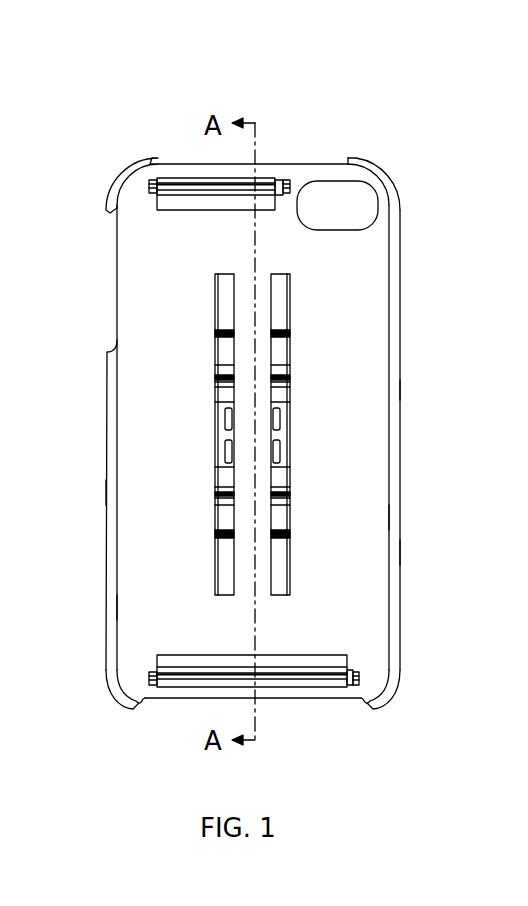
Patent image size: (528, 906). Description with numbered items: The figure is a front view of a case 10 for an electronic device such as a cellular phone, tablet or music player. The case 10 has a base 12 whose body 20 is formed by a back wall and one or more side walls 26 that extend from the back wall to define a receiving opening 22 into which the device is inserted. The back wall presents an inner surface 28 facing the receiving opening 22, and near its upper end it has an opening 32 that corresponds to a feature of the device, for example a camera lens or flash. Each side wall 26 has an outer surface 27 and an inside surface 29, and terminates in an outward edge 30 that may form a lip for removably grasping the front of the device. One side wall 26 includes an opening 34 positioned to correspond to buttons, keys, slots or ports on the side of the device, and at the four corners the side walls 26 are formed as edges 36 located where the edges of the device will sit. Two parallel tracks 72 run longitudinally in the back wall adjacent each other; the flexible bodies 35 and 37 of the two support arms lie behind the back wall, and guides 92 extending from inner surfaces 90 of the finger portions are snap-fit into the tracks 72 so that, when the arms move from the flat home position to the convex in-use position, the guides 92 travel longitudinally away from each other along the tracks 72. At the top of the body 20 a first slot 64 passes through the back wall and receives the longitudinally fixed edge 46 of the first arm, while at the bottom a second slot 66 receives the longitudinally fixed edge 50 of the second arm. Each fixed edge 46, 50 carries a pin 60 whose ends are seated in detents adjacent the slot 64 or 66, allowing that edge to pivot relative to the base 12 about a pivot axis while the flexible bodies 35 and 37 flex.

The case 10 is at (150, 121).
The base 12 is at (376, 152).
The body 20 is at (400, 385).
The receiving opening 22 is at (398, 461).
The side wall 26 is at (107, 352).
The outer surface 27 is at (97, 494).
The inner surface 28 is at (372, 300).
The inside surface 29 is at (128, 608).
The outward edge 30 is at (117, 384).
The opening 32 is at (341, 231).
The opening 34 is at (104, 272).
The flexible body 35 is at (280, 345).
The edge 36 is at (124, 170).
The flexible body 37 is at (288, 560).
The longitudinally fixed edge 46 is at (266, 172).
The longitudinally fixed edge 50 is at (327, 690).
The pin 60 is at (284, 179).
The first slot 64 is at (180, 212).
The second slot 66 is at (297, 655).
The track 72 is at (284, 502).
The inner surface 90 is at (222, 420).
The guide 92 is at (282, 418).